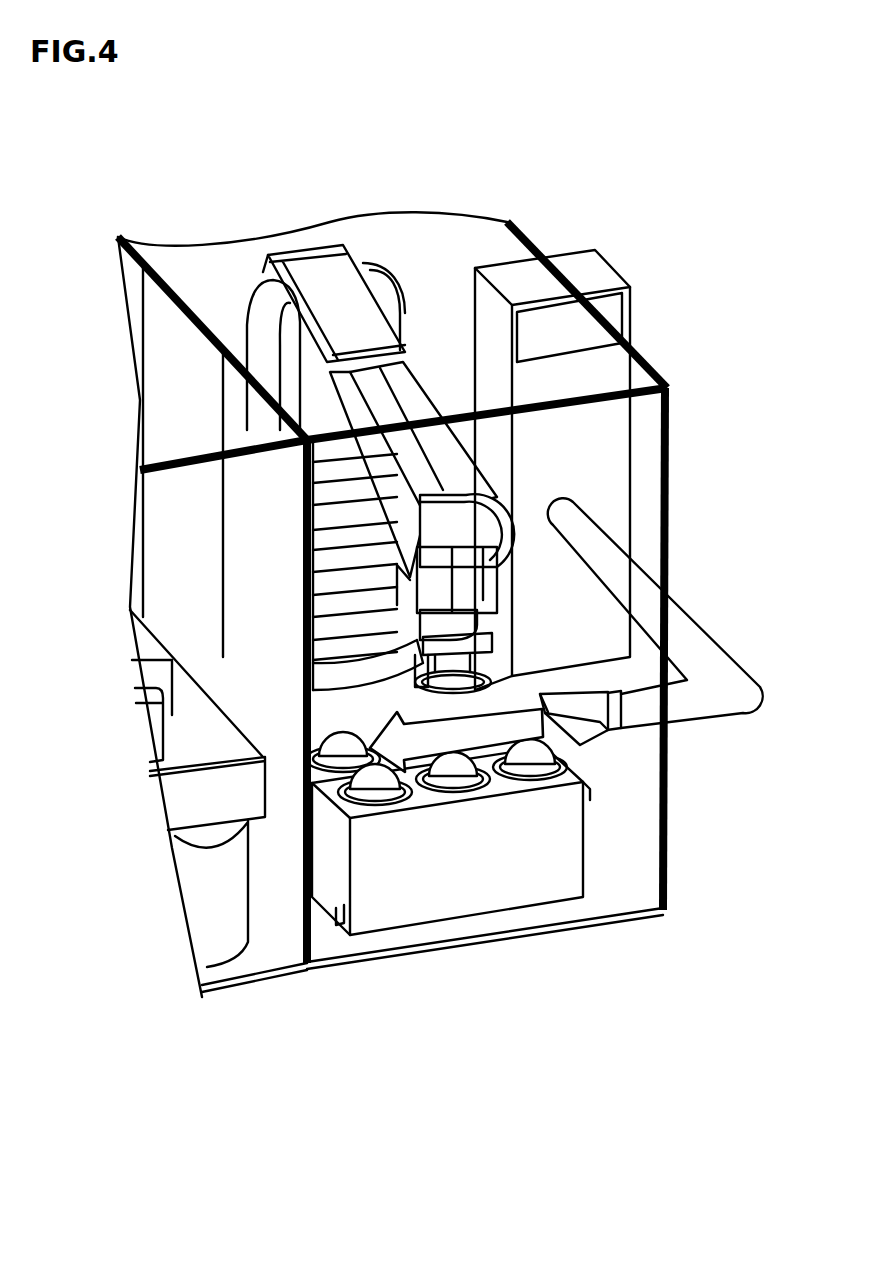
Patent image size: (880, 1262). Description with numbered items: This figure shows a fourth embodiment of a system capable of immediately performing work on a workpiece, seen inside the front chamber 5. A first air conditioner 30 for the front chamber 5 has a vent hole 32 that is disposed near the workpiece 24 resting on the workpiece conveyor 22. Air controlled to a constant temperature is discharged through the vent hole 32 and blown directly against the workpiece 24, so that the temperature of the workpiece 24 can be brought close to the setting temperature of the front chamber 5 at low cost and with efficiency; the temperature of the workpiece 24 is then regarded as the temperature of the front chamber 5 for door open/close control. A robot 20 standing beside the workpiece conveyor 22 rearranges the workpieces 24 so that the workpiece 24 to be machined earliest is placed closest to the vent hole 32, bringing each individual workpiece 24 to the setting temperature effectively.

The front chamber 5 is at (446, 243).
The robot 20 is at (327, 302).
The workpiece conveyor 22 is at (533, 860).
The workpiece 24 is at (458, 778).
The first air conditioner 30 is at (600, 268).
The vent hole 32 is at (604, 738).